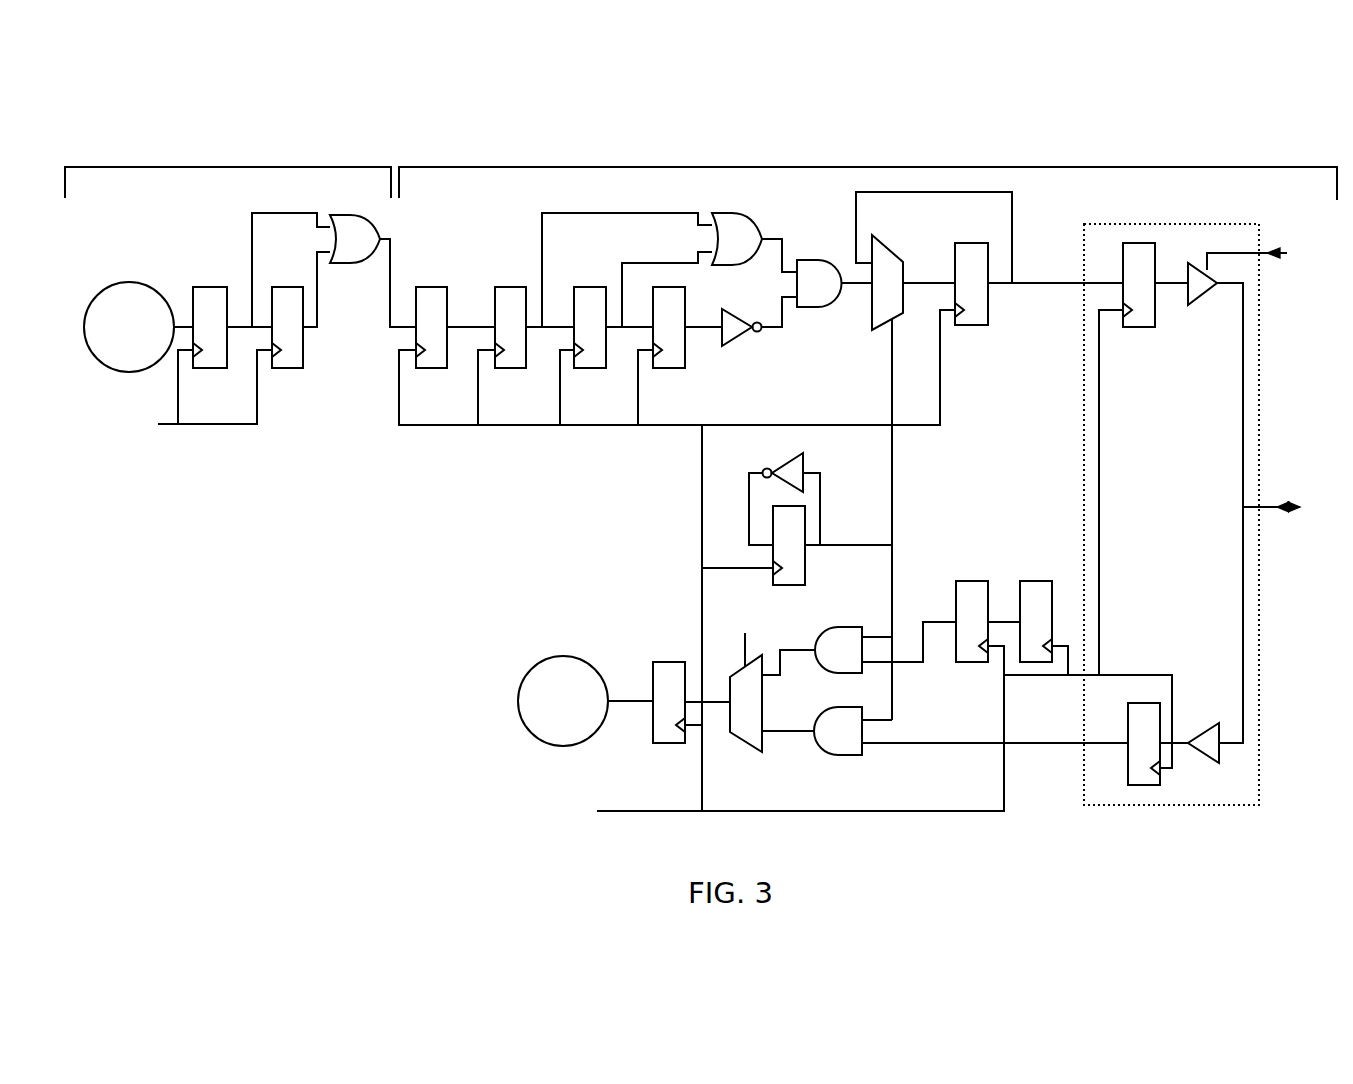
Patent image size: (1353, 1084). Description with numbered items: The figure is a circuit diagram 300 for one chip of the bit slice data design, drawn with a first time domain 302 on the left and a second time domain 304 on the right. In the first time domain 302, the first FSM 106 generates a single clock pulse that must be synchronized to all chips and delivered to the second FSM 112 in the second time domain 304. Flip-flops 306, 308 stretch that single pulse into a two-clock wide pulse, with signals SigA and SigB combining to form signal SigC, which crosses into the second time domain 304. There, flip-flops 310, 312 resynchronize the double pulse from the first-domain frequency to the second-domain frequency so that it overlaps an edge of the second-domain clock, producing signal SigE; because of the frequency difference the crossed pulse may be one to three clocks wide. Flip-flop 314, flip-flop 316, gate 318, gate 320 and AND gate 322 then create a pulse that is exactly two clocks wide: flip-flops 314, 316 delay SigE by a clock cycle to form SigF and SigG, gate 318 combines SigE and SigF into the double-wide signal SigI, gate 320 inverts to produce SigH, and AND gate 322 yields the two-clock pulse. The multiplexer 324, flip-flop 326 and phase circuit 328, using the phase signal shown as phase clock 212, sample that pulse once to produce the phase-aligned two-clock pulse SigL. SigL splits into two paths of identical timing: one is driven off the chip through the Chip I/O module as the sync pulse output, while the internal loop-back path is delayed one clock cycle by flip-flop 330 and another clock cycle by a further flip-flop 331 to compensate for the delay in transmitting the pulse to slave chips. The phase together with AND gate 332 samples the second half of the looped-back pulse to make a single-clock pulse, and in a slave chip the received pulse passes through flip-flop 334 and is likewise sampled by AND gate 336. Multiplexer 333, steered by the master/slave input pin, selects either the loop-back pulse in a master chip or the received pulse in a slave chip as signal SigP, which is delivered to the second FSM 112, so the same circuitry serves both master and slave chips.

The circuit diagram 300 is at (1135, 147).
The first time domain 302 is at (285, 166).
The second time domain 304 is at (915, 166).
The FSM1 106 is at (131, 281).
The FSM2 112 is at (563, 657).
The phase clock 212 is at (855, 535).
The flip-flop 306 is at (200, 287).
The flip-flop 308 is at (281, 287).
The flip-flop 310 is at (427, 287).
The flip-flop 312 is at (506, 287).
The flip-flop 314 is at (587, 287).
The flip-flop 316 is at (665, 287).
The gate 318 is at (725, 213).
The gate 320 is at (733, 347).
The AND gate 322 is at (810, 259).
The multiplexer 324 is at (886, 243).
The flip-flop 326 is at (969, 243).
The phase circuit 328 is at (807, 463).
The flip-flop 330 is at (1030, 581).
The flip-flop 331 is at (965, 581).
The AND gate 332 is at (836, 627).
The multiplexer 333 is at (745, 752).
The flip-flop 334 is at (1138, 786).
The AND gate 336 is at (836, 755).